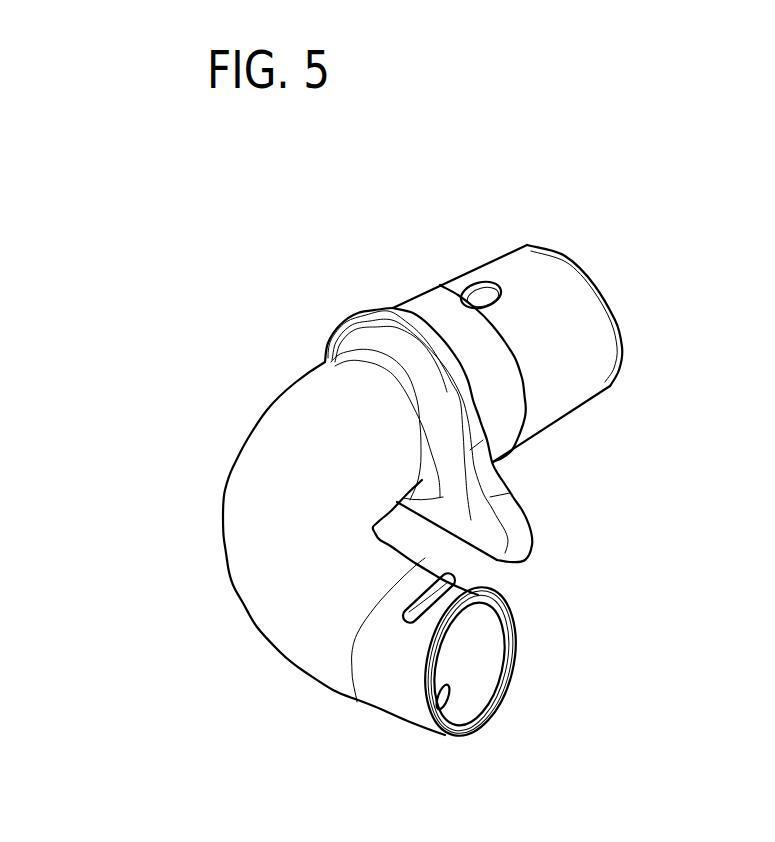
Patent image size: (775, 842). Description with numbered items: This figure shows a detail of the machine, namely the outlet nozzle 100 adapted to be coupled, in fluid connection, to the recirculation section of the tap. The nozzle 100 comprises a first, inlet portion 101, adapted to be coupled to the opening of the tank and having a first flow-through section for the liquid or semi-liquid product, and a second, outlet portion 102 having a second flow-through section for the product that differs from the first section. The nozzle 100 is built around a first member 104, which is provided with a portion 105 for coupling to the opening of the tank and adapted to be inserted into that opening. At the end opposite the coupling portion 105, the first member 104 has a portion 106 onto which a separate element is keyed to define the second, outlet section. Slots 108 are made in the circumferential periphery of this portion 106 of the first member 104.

The nozzle 100 is at (590, 498).
The first, inlet portion 101 is at (606, 260).
The second, outlet portion 102 is at (487, 670).
The first member 104 is at (262, 673).
The portion for coupling to the opening of the tank 105 is at (507, 228).
The portion of the first member 106 is at (388, 735).
The slots 108 is at (415, 580).